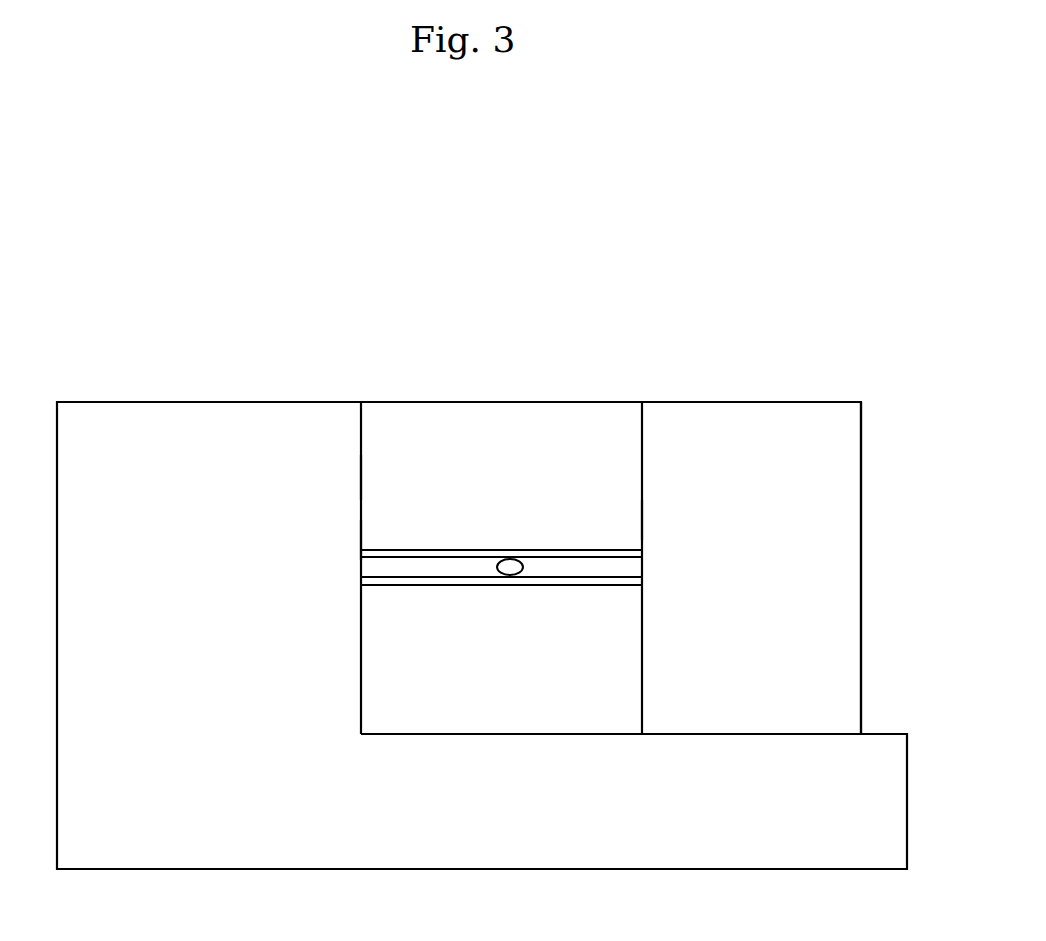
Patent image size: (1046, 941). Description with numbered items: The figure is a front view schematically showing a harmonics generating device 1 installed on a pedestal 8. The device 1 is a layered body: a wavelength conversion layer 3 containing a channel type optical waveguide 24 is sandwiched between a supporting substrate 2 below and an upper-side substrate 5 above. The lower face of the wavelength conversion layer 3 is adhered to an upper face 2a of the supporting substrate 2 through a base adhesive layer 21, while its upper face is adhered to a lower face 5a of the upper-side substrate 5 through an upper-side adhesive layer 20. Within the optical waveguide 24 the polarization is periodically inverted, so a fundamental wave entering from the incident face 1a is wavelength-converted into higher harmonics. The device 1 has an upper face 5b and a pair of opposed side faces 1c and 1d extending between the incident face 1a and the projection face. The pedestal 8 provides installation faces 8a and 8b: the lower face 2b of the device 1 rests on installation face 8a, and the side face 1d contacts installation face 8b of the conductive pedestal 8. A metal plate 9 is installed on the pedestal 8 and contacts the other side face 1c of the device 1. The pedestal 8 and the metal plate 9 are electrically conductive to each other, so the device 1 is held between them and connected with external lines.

The harmonics generating device 1 is at (645, 398).
The incident face 1a is at (535, 418).
The side face 1c is at (641, 518).
The side face 1d is at (360, 540).
The supporting substrate 2 is at (630, 653).
The upper face of supporting substrate 2a is at (451, 585).
The lower face of the device 2b is at (562, 735).
The wavelength conversion layer 3 is at (631, 571).
The upper-side substrate 5 is at (630, 485).
The lower face of upper-side substrate 5a is at (585, 557).
The upper face of the device 5b is at (457, 403).
The pedestal 8 is at (288, 411).
The installation face 8a is at (485, 733).
The installation face 8b is at (361, 479).
The metal plate 9 is at (848, 526).
The upper-side adhesive layer 20 is at (401, 551).
The base adhesive layer 21 is at (426, 586).
The channel type optical waveguide 24 is at (510, 560).